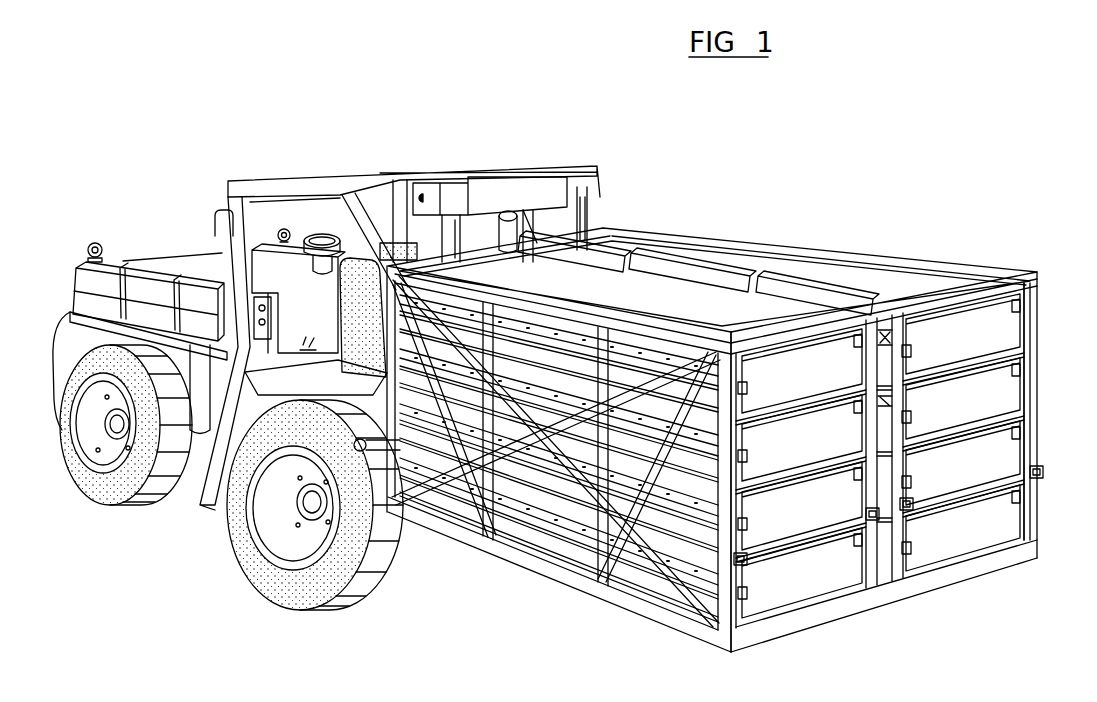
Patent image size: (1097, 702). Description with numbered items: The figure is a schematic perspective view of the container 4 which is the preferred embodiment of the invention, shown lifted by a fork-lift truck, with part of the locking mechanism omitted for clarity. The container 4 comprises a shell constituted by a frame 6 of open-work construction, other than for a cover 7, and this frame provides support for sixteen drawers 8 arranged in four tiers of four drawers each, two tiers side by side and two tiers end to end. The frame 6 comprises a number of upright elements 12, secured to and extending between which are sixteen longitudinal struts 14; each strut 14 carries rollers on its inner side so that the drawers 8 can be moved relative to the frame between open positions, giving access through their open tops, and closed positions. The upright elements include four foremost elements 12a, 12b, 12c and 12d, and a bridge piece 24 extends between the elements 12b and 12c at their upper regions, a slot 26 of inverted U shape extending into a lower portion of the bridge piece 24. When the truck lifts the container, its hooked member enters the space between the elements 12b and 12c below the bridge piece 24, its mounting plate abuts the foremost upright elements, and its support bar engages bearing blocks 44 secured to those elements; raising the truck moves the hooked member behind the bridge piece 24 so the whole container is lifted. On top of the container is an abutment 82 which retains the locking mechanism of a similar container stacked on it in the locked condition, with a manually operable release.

The container 4 is at (838, 241).
The frame 6 is at (1046, 284).
The cover 7 is at (650, 250).
The abutment 82 is at (780, 278).
The drawer 8 is at (522, 410).
The upright element 12 is at (462, 515).
The foremost upright element 12a is at (732, 600).
The foremost upright element 12b is at (872, 565).
The foremost upright element 12c is at (900, 552).
The foremost upright element 12d is at (1033, 545).
The longitudinal strut 14 is at (555, 395).
The bridge piece 24 is at (890, 322).
The slot 26 is at (912, 340).
The bearing block 44 is at (868, 514).